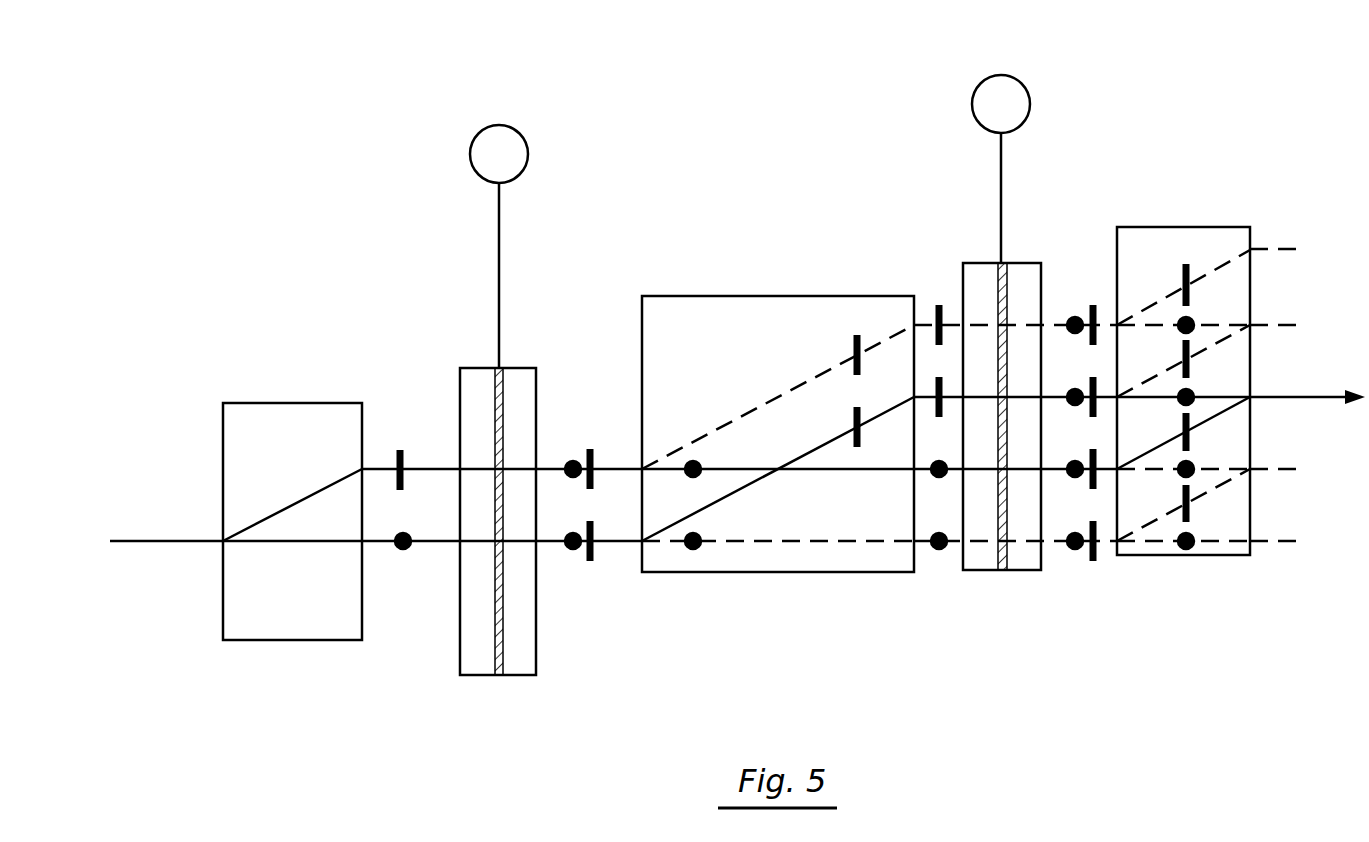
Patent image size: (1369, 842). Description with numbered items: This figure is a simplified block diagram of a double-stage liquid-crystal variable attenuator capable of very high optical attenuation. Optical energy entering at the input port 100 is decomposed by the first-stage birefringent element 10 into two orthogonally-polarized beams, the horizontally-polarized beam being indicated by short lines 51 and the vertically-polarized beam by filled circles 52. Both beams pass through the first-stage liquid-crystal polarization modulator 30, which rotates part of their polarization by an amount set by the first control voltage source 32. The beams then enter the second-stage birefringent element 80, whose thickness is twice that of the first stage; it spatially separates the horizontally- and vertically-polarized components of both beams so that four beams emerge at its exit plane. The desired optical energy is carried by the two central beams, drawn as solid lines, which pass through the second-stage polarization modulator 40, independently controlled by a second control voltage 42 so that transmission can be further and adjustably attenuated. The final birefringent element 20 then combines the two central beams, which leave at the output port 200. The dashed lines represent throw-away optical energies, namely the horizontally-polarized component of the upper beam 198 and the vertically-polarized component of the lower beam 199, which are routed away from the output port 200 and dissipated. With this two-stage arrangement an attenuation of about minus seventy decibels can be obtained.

The input port 100 is at (147, 538).
The first birefringent element 10 is at (305, 642).
The horizontally-polarized beam indicator 51 is at (400, 448).
The vertically-polarized beam indicator 52 is at (408, 548).
The liquid-crystal polarization modulator 30 is at (518, 677).
The voltage source 32 is at (515, 128).
The second-stage birefringent element 80 is at (792, 574).
The second-stage polarization modulator 40 is at (1028, 572).
The second control voltage 42 is at (1018, 78).
The final birefringent element 20 is at (1215, 557).
The horizontally-polarized component of the upper beam 198 is at (1282, 249).
The vertically-polarized component of the lower beam 199 is at (1282, 469).
The output port 200 is at (1334, 400).